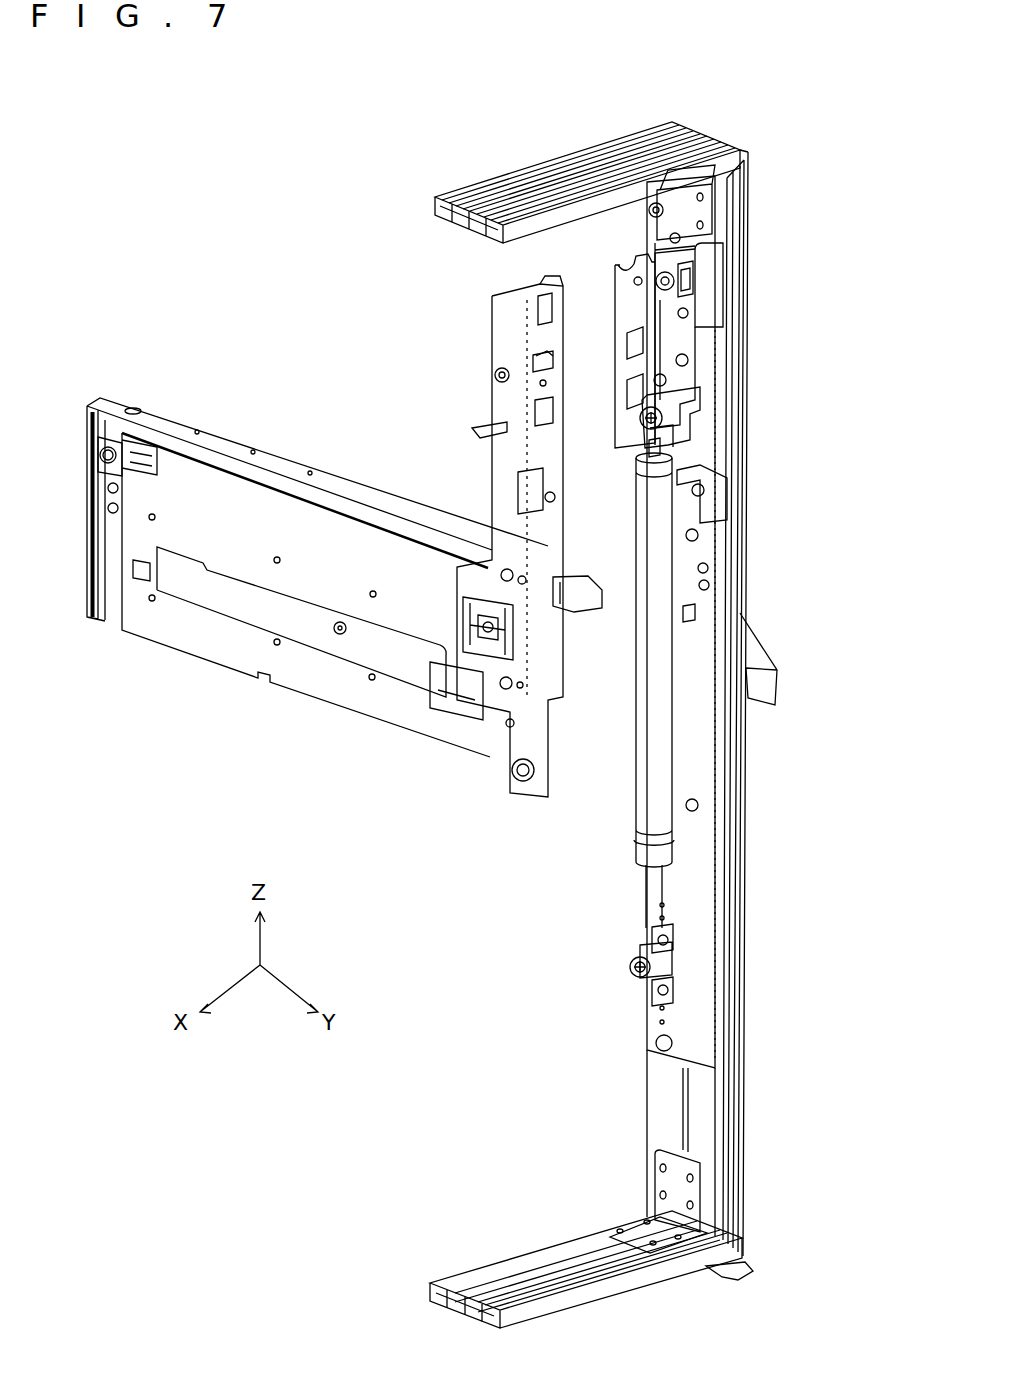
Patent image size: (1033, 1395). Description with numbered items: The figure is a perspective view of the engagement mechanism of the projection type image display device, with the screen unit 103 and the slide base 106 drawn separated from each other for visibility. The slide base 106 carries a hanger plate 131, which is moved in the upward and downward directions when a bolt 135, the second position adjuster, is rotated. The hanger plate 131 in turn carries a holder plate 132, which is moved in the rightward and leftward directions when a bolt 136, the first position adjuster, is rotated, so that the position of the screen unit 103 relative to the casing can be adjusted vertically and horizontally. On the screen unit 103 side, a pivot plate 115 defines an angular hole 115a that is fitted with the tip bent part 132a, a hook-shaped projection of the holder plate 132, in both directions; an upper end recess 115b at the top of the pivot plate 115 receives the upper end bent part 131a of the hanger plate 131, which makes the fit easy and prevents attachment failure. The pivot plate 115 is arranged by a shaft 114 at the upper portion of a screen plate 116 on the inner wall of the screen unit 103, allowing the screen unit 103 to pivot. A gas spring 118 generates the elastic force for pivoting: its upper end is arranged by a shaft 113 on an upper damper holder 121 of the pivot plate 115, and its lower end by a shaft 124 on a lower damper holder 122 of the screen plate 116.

The screen unit 103 is at (700, 131).
The slide base 106 is at (198, 638).
The shaft 113 is at (673, 424).
The shaft 114 is at (660, 283).
The pivot plate 115 is at (645, 364).
The angular hole 115a is at (643, 343).
The upper end recess 115b is at (633, 263).
The screen plate 116 is at (685, 830).
The gas spring 118 is at (655, 583).
The upper damper holder 121 is at (667, 407).
The lower damper holder 122 is at (673, 945).
The shaft 124 is at (630, 967).
The hanger plate 131 is at (553, 682).
The upper end bent part 131a is at (535, 282).
The holder plate 132 is at (535, 367).
The tip bent part 132a is at (543, 358).
The bolt 135 is at (475, 633).
The bolt 136 is at (500, 376).